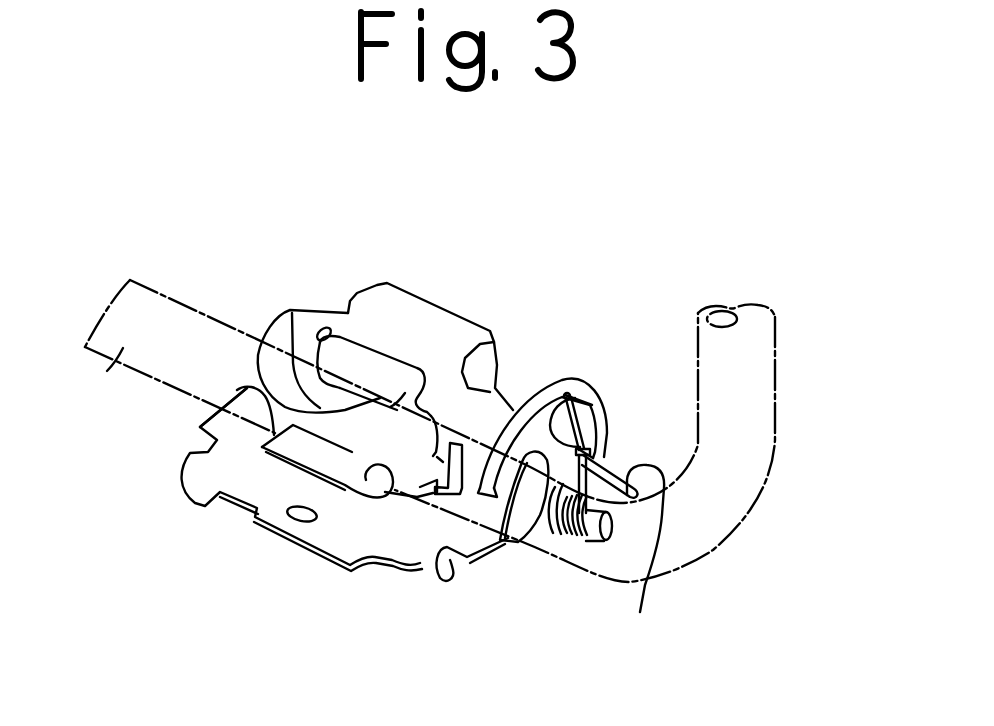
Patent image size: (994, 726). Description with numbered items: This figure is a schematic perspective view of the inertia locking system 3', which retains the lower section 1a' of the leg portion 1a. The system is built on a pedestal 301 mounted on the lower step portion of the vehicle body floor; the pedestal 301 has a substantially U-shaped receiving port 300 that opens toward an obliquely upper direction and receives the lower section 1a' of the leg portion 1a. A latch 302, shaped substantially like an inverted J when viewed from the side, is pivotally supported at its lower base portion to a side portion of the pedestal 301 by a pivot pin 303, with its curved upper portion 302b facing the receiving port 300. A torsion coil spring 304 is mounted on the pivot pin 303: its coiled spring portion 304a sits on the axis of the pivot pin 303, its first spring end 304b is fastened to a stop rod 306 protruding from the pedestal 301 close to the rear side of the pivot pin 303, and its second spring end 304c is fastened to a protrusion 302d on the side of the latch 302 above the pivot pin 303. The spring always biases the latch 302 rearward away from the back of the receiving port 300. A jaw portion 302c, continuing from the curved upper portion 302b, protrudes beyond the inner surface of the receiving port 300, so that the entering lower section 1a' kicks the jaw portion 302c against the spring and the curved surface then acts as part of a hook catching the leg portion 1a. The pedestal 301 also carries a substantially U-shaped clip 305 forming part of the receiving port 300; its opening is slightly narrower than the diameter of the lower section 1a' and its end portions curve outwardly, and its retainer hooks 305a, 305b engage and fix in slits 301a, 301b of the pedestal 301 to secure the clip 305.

The leg portion 1a is at (621, 443).
The lower section of the leg portion 1a' is at (283, 372).
The inertia locking system 3' is at (192, 490).
The receiving port 300 is at (372, 408).
The pedestal 301 is at (375, 280).
The slit 301a is at (292, 313).
The slit 301b is at (430, 483).
The latch 302 is at (548, 374).
The curved upper portion 302b is at (496, 488).
The jaw portion 302c is at (547, 513).
The protrusion 302d is at (607, 431).
The pivot pin 303 is at (612, 540).
The torsion coil spring 304 is at (553, 545).
The coiled spring portion 304a is at (607, 545).
The first spring end 304b is at (655, 557).
The second spring end 304c is at (569, 395).
The clip 305 is at (240, 388).
The retainer hook 305a is at (278, 428).
The retainer hook 305b is at (517, 420).
The stop rod 306 is at (613, 475).